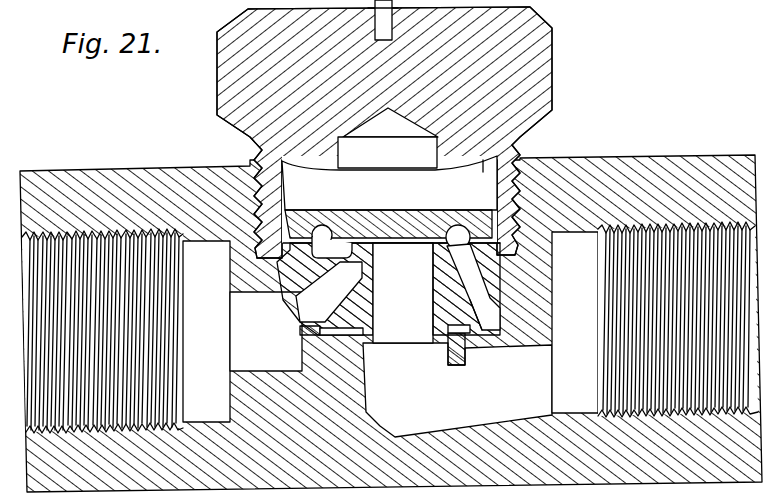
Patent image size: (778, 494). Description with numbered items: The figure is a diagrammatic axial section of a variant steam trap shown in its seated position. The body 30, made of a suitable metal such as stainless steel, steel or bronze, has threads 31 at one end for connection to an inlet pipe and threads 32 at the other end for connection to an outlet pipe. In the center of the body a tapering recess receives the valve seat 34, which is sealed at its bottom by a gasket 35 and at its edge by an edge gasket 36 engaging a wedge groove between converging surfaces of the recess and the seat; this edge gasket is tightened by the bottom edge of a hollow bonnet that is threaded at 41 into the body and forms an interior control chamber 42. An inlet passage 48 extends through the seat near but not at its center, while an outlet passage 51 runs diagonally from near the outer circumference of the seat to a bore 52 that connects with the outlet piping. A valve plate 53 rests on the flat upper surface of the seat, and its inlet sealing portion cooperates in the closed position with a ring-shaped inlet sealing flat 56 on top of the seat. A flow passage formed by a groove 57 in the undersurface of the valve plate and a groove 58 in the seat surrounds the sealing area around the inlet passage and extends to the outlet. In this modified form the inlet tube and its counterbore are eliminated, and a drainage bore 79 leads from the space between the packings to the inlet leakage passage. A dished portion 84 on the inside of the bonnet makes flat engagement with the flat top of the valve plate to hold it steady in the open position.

The body 30 is at (391, 312).
The threads 31 is at (608, 264).
The threads 32 is at (174, 268).
The valve seat 34 is at (310, 330).
The gasket 35 is at (462, 346).
The edge gasket 36 is at (520, 264).
The bonnet threads 41 is at (518, 154).
The interior control chamber 42 is at (446, 193).
The inlet passage 48 is at (430, 262).
The outlet passage 51 is at (325, 280).
The bore 52 is at (330, 322).
The valve plate 53 is at (328, 218).
The inlet sealing flat 56 is at (380, 250).
The groove 57 is at (332, 251).
The groove 58 is at (474, 278).
The drainage bore 79 is at (452, 302).
The dished portion 84 is at (483, 161).